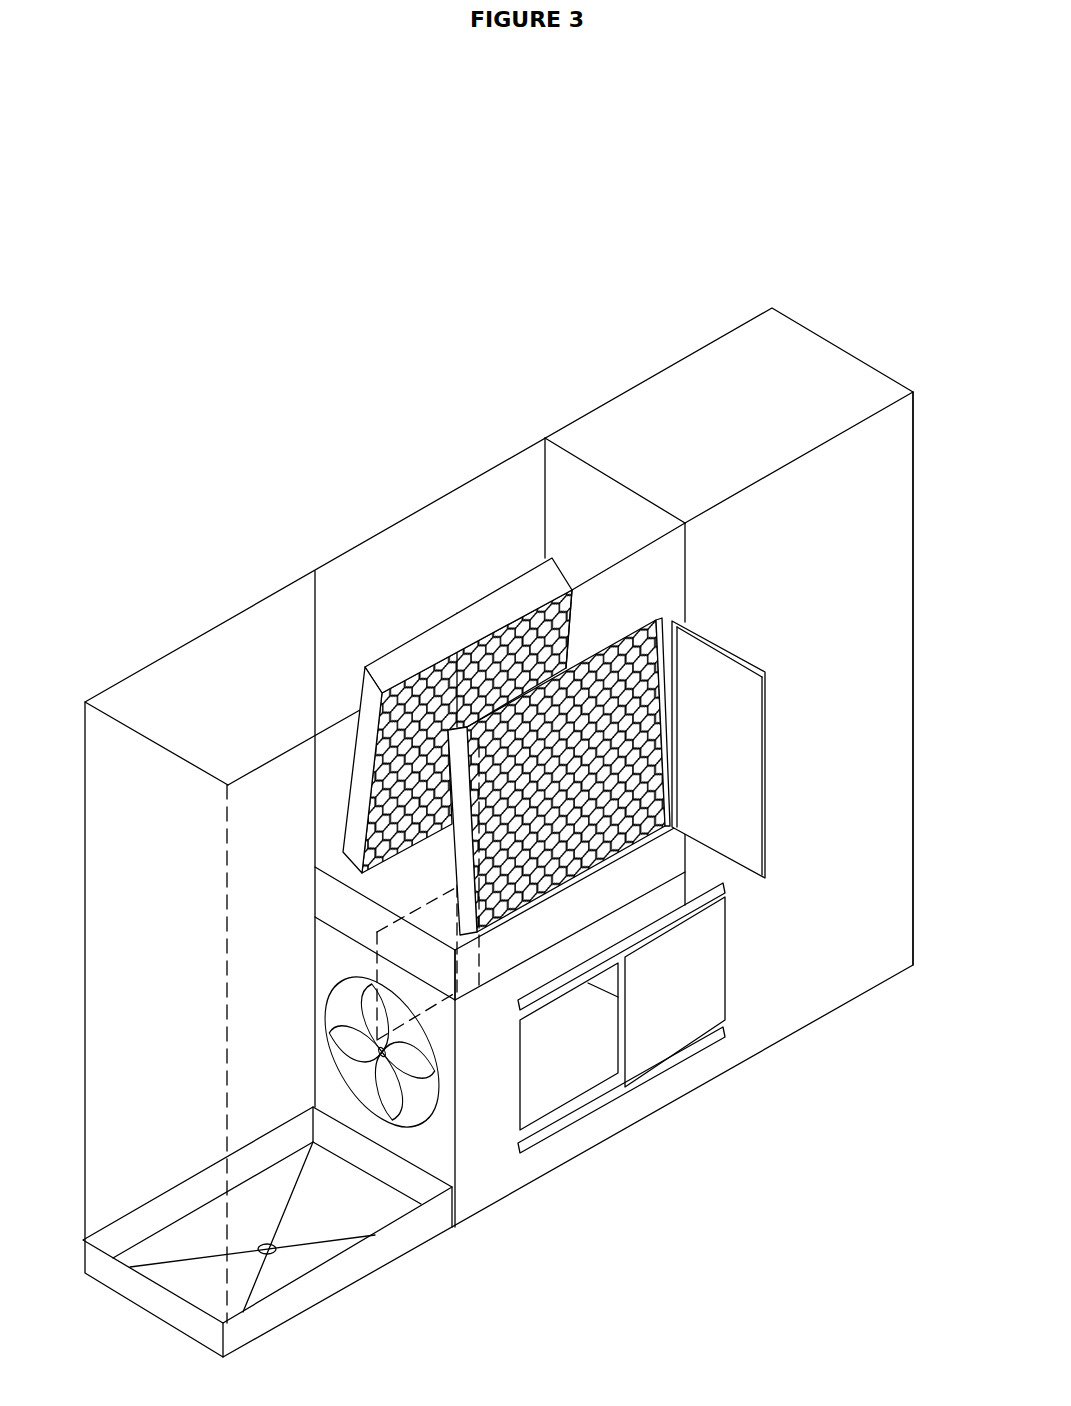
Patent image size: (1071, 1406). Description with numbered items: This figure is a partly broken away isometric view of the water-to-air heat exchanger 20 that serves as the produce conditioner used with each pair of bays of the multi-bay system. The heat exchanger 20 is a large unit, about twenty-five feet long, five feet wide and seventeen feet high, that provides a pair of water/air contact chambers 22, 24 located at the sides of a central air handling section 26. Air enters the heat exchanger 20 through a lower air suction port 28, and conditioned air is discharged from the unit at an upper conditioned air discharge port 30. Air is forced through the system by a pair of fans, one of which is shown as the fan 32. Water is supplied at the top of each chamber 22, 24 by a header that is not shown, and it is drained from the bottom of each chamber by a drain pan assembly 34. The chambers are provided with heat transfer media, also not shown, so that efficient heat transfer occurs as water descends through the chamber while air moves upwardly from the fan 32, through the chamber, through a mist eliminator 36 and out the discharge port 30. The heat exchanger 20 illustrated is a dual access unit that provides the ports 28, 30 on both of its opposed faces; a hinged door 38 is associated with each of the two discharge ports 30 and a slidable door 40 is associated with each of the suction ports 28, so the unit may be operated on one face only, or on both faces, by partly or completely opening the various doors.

The water-to-air heat exchanger 20 is at (542, 402).
The water/air contact chamber 22 is at (125, 957).
The water/air contact chamber 24 is at (853, 654).
The central air handling section 26 is at (456, 572).
The lower air suction port 28 is at (518, 1078).
The upper conditioned air discharge port 30 is at (669, 606).
The fan 32 is at (393, 1105).
The drain pan assembly 34 is at (290, 1270).
The mist eliminator 36 is at (558, 881).
The hinged door 38 is at (748, 785).
The slidable door 40 is at (693, 987).